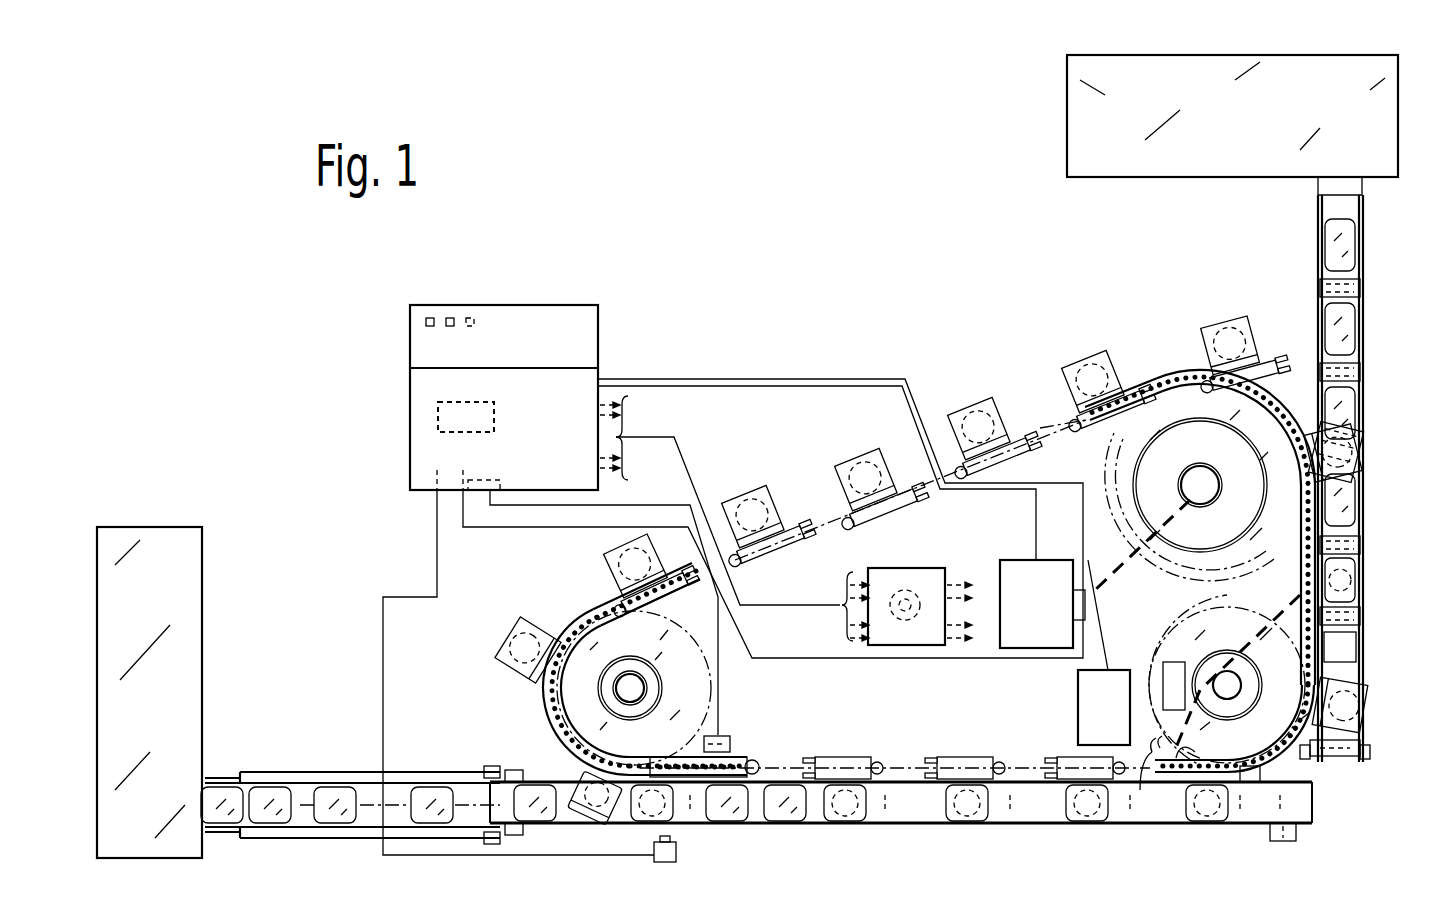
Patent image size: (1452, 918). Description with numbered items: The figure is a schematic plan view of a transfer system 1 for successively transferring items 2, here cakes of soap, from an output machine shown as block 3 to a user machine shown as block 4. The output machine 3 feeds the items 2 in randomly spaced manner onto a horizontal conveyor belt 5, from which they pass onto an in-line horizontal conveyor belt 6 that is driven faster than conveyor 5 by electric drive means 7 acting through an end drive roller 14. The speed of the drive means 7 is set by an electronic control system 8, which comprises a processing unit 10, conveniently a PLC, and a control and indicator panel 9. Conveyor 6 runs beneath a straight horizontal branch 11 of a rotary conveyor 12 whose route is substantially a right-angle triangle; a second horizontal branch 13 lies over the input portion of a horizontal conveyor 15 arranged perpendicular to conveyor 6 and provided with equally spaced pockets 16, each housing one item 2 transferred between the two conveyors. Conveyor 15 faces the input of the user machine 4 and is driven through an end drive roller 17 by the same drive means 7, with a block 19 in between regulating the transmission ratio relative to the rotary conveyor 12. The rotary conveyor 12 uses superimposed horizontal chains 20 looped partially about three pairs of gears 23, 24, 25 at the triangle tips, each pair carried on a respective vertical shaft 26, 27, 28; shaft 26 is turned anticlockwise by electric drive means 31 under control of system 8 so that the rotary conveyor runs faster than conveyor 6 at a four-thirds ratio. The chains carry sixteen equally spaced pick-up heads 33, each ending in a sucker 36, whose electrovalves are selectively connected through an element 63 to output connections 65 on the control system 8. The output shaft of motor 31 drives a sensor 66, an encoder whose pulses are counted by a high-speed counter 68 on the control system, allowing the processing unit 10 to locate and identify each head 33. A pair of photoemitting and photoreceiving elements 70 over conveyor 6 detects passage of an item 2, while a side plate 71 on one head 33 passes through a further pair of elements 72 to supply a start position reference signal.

The system 1 is at (773, 292).
The items 2 is at (222, 790).
The output machine 3 is at (172, 560).
The user machine 4 is at (1080, 128).
The horizontal conveyor belt 5 is at (382, 790).
The horizontal conveyor belt 6 is at (921, 830).
The electric drive means 7 is at (1090, 700).
The electronic control system 8 is at (483, 377).
The control and indicator panel 9 is at (505, 322).
The processing unit 10 is at (432, 413).
The straight horizontal branch 11 is at (900, 762).
The rotary conveyor 12 is at (1062, 385).
The second horizontal branch 13 is at (1316, 640).
The end drive roller 14 is at (1297, 835).
The horizontal conveyor 15 is at (1368, 470).
The pockets 16 is at (1330, 275).
The end drive roller 17 is at (1375, 762).
The block 19 is at (1172, 665).
The horizontal chain 20 is at (1190, 790).
The pair of gears 23 is at (1100, 430).
The pair of gears 24 is at (656, 669).
The pair of gears 25 is at (1160, 770).
The vertical shaft 26 is at (1200, 478).
The vertical shaft 27 is at (635, 688).
The vertical shaft 28 is at (1226, 674).
The electric drive means 31 is at (1020, 575).
The pick-up heads 33 is at (600, 572).
The sucker 36 is at (535, 618).
The element 63 is at (928, 575).
The output connections 65 is at (647, 428).
The sensor 66 is at (1095, 598).
The high-speed counter 68 is at (505, 480).
The photoemitting and photoreceiving elements 70 is at (662, 852).
The side plate 71 is at (718, 752).
The photoemitting and photoreceiving elements 72 is at (728, 736).